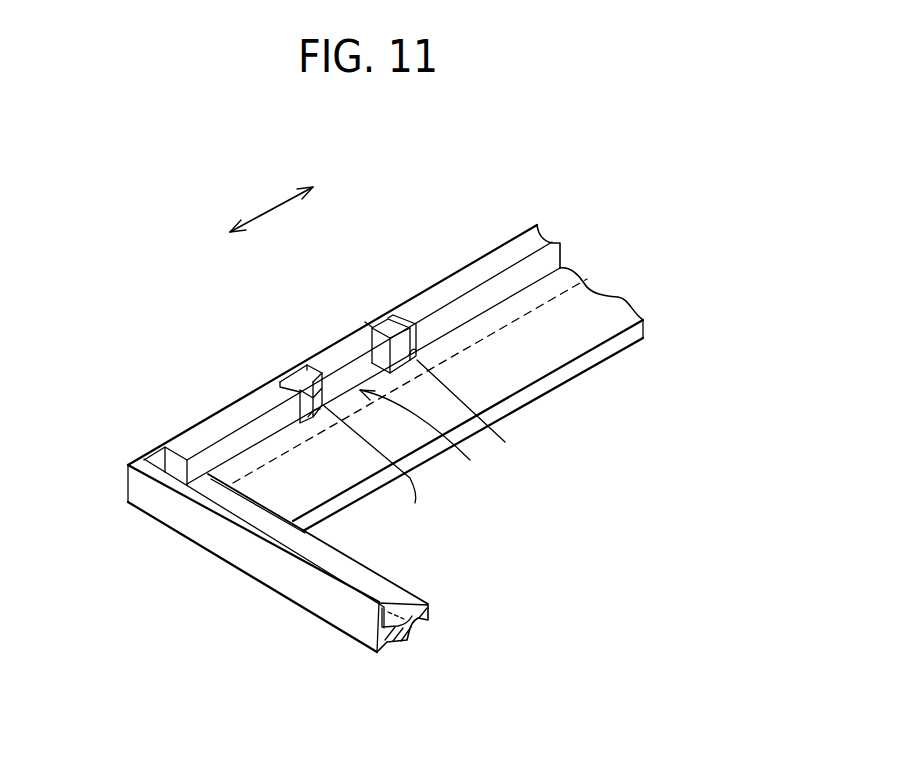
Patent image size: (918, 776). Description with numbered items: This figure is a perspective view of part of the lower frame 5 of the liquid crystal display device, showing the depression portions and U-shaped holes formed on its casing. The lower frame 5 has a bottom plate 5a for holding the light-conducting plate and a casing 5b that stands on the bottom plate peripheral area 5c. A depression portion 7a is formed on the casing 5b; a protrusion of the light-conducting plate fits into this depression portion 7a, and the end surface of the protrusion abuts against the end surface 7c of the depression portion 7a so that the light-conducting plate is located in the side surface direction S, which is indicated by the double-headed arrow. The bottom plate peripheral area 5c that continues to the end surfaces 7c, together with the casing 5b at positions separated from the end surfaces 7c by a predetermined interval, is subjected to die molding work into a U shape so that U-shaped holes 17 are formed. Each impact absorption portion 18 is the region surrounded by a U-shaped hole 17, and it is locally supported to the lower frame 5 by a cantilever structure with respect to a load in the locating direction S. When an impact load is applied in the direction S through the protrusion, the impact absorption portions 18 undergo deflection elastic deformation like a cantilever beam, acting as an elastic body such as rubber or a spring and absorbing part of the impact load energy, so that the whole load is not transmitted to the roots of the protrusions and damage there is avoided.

The lower frame 5 is at (165, 337).
The bottom plate 5a is at (553, 355).
The casing 5b is at (492, 267).
The bottom plate peripheral area 5c is at (575, 243).
The depression portion 7a is at (470, 460).
The end surface of the depression portion 7c is at (320, 370).
The U-shaped hole 17 is at (415, 503).
The impact absorption portion 18 is at (297, 380).
The side surface direction S is at (268, 210).